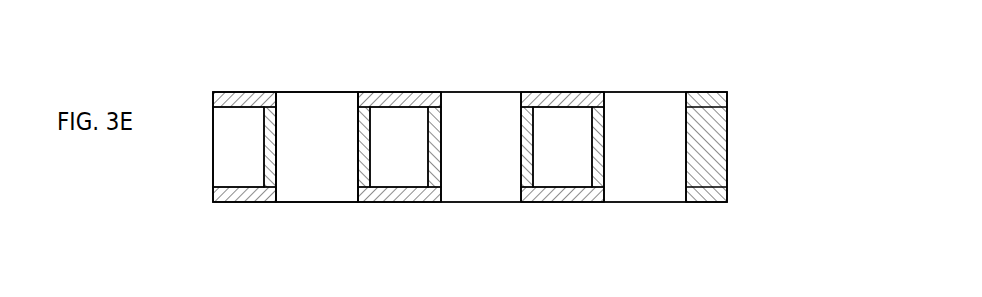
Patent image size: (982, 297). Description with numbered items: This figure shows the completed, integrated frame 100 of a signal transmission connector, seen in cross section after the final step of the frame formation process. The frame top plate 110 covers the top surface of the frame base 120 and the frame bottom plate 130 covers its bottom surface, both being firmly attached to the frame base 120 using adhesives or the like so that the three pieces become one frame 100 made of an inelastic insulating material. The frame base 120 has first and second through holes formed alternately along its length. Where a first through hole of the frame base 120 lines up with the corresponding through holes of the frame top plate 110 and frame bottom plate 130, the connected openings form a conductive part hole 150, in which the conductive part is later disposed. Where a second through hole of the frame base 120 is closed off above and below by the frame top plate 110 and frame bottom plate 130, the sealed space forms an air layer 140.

The frame 100 is at (519, 147).
The frame top plate 110 is at (560, 100).
The frame base 120 is at (598, 138).
The frame bottom plate 130 is at (562, 193).
The air layer 140 is at (400, 135).
The conductive part hole 150 is at (313, 123).